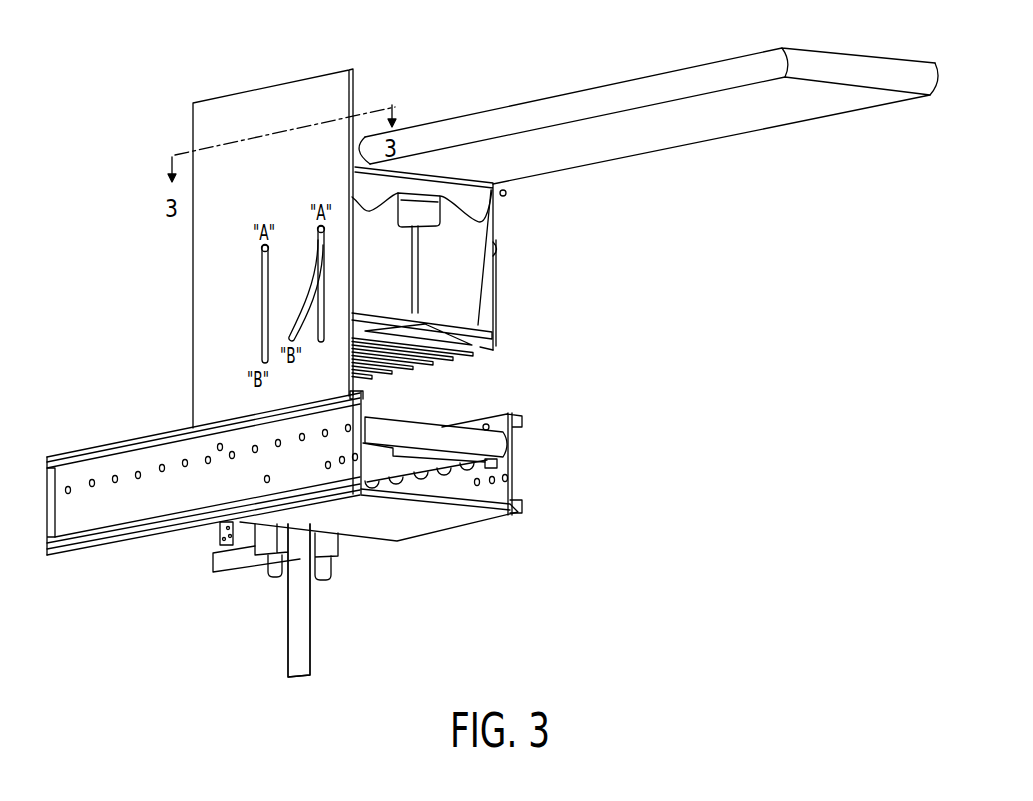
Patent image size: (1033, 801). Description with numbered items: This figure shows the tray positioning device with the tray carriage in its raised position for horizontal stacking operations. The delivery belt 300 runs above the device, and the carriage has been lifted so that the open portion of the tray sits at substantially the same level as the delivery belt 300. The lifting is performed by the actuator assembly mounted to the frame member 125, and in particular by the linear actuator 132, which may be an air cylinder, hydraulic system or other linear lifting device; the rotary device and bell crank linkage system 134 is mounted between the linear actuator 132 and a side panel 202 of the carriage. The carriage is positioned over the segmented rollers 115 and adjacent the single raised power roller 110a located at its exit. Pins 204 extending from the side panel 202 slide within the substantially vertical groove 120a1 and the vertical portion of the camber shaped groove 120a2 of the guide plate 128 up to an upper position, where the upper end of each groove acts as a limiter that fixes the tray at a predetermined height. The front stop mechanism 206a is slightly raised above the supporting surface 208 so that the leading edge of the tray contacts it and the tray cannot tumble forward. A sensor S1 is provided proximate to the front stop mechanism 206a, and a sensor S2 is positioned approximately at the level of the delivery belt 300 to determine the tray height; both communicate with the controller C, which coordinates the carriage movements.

The panel 128 is at (307, 85).
The substantially vertical groove 120a1 is at (262, 300).
The camber shaped groove 120a2 is at (323, 262).
The pins 204 is at (264, 246).
The delivery belt 300 is at (670, 148).
The sensor S2 is at (507, 195).
The side panel 202 is at (495, 278).
The front stop mechanism 206a is at (493, 327).
The supporting surface 208 is at (463, 355).
The sensor S1 is at (483, 425).
The power roller 110a is at (498, 445).
The segmented rollers 115 is at (497, 467).
The frame member 125 is at (463, 520).
The rotary device and bell crank linkage system 134 is at (338, 558).
The linear actuator 132 is at (311, 644).
The controller C is at (278, 580).